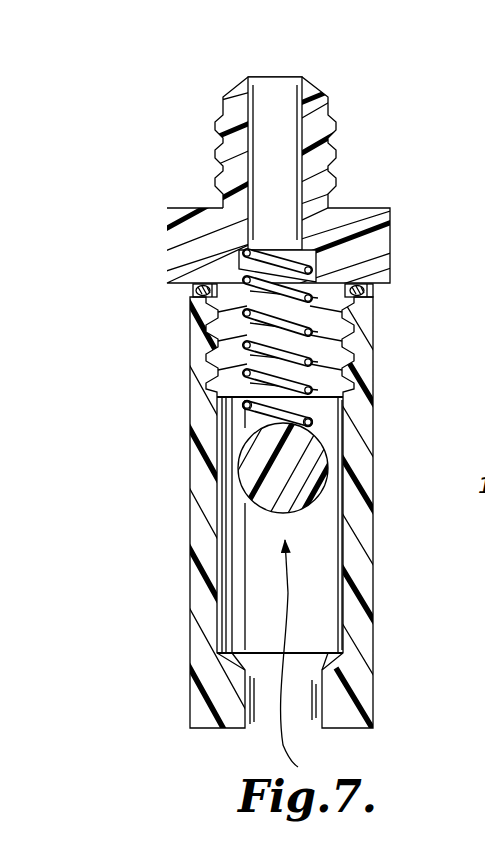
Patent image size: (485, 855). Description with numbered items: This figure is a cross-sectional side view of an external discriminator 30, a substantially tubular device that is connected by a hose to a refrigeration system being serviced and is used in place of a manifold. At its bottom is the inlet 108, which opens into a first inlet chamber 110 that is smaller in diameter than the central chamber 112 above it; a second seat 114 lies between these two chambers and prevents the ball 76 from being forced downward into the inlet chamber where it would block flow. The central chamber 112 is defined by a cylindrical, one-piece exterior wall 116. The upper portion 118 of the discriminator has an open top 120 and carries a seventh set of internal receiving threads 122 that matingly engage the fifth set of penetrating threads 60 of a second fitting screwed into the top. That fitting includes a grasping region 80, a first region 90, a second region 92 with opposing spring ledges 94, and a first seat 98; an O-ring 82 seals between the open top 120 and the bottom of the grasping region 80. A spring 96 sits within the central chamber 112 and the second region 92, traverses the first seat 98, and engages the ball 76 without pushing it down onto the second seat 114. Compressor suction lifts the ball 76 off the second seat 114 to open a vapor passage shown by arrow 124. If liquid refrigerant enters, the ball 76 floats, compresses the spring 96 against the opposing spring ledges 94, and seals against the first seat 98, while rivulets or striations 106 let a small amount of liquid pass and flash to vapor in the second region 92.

The external discriminator 30 is at (370, 184).
The fifth set of penetrating threads 60 is at (350, 388).
The ball 76 is at (262, 453).
The grasping region 80 is at (392, 238).
The O-ring 82 is at (196, 291).
The first region 90 is at (282, 155).
The second region 92 is at (345, 258).
The opposing spring ledges 94 is at (346, 213).
The spring 96 is at (288, 338).
The first seat 98 is at (246, 403).
The rivulets/striations 106 is at (282, 405).
The inlet 108 is at (257, 734).
The first inlet chamber 110 is at (262, 697).
The central chamber 112 is at (245, 538).
The second seat 114 is at (246, 670).
The exterior wall 116 is at (200, 580).
The upper portion 118 is at (377, 360).
The open top 120 is at (199, 305).
The seventh set of internal receiving threads 122 is at (350, 398).
The vapor passage arrow 124 is at (288, 593).